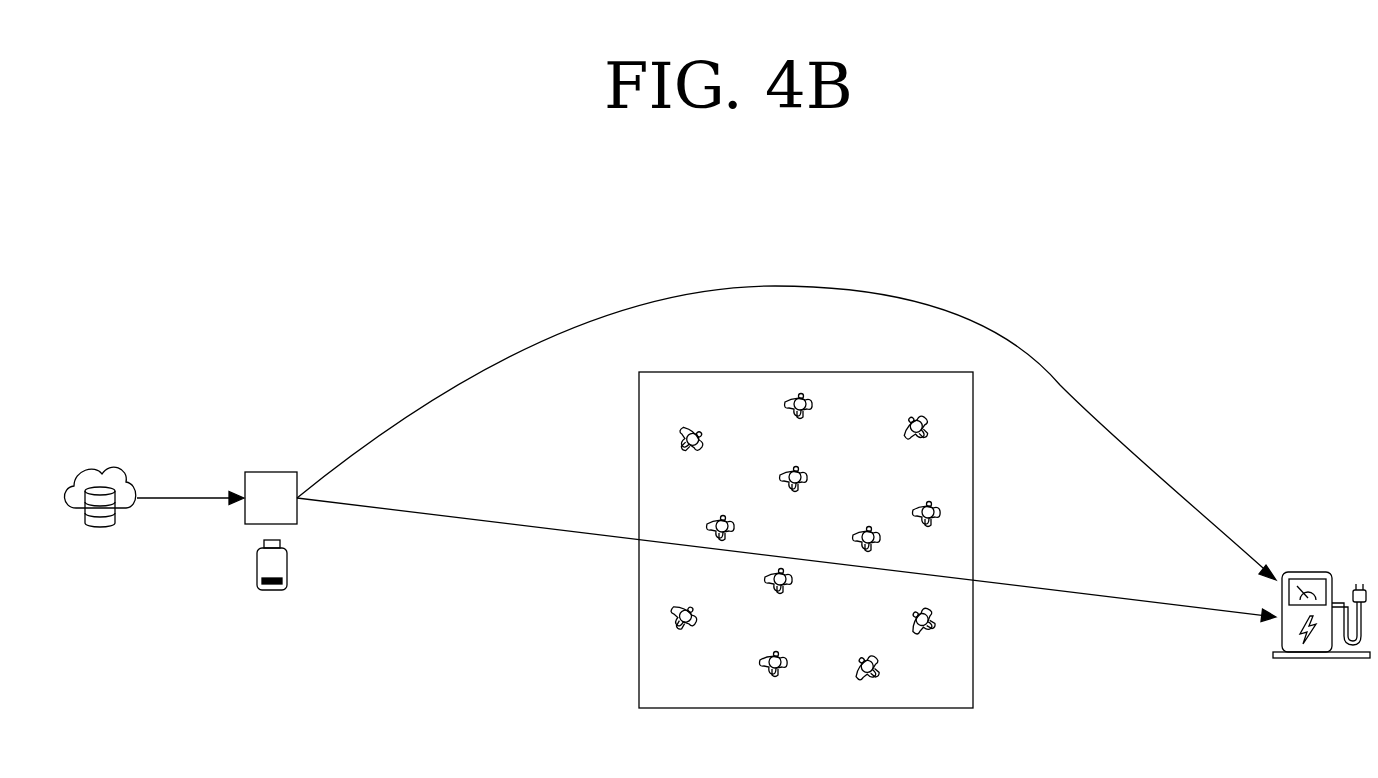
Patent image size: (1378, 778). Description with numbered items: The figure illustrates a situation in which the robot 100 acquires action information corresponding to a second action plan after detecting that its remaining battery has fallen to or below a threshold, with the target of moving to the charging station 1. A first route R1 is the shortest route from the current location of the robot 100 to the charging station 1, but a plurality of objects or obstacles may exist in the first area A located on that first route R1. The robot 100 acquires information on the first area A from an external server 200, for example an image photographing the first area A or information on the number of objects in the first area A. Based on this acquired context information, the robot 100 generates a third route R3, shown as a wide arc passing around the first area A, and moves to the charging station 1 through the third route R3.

The charging station 1 is at (1322, 572).
The robot 100 is at (265, 472).
The external server 200 is at (102, 467).
The first area A is at (806, 372).
The first route R1 is at (385, 509).
The third route R3 is at (503, 356).